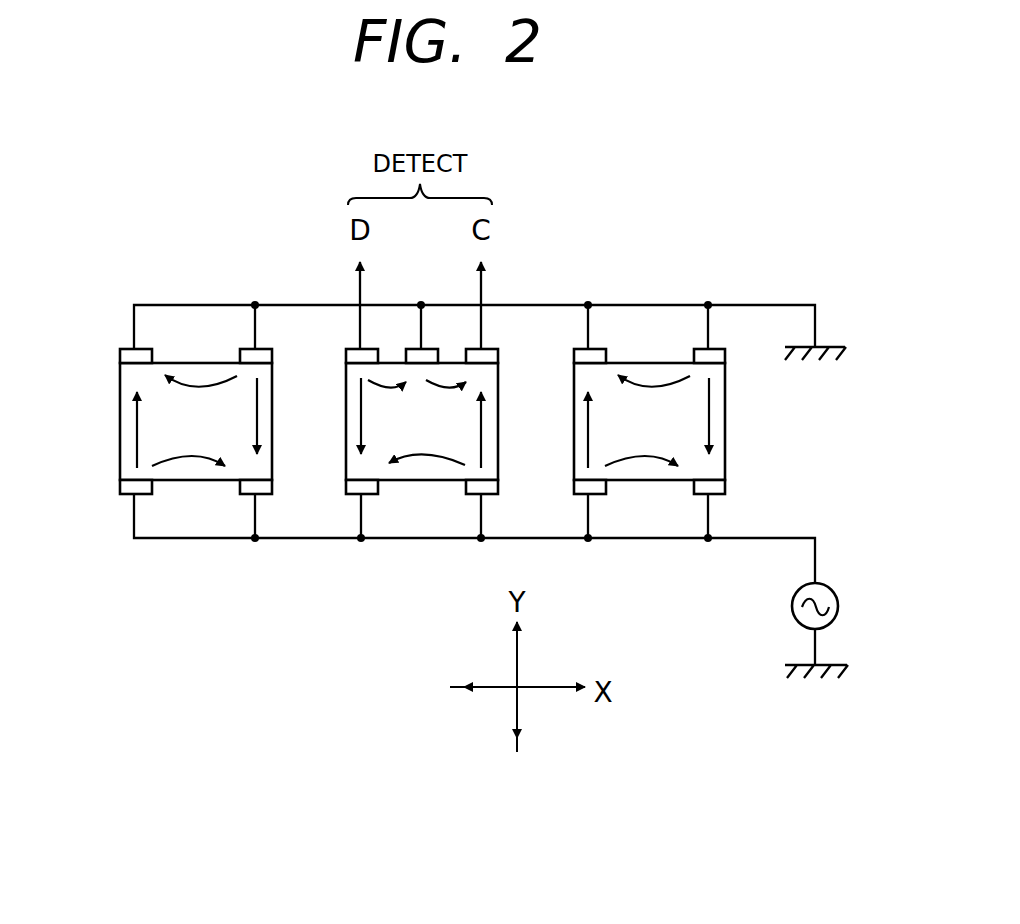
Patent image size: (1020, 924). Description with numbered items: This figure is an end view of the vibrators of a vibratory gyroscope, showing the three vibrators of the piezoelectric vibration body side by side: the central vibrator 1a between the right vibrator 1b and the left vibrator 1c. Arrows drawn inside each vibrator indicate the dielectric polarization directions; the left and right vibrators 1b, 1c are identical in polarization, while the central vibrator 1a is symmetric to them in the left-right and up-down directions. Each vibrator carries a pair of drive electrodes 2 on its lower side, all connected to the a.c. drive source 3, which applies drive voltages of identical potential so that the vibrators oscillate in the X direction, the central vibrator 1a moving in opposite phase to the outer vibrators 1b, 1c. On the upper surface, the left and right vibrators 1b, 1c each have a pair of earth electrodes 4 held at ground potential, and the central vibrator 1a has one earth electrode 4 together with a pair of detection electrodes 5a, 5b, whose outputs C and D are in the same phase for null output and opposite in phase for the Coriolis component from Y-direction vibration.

The central vibrator 1a is at (500, 430).
The right vibrator 1b is at (725, 422).
The left vibrator 1c is at (120, 452).
The drive electrode 2 is at (247, 494).
The a.c. drive source 3 is at (838, 600).
The earth electrode 4 is at (240, 351).
The detection electrode 5a is at (493, 350).
The detection electrode 5b is at (352, 350).